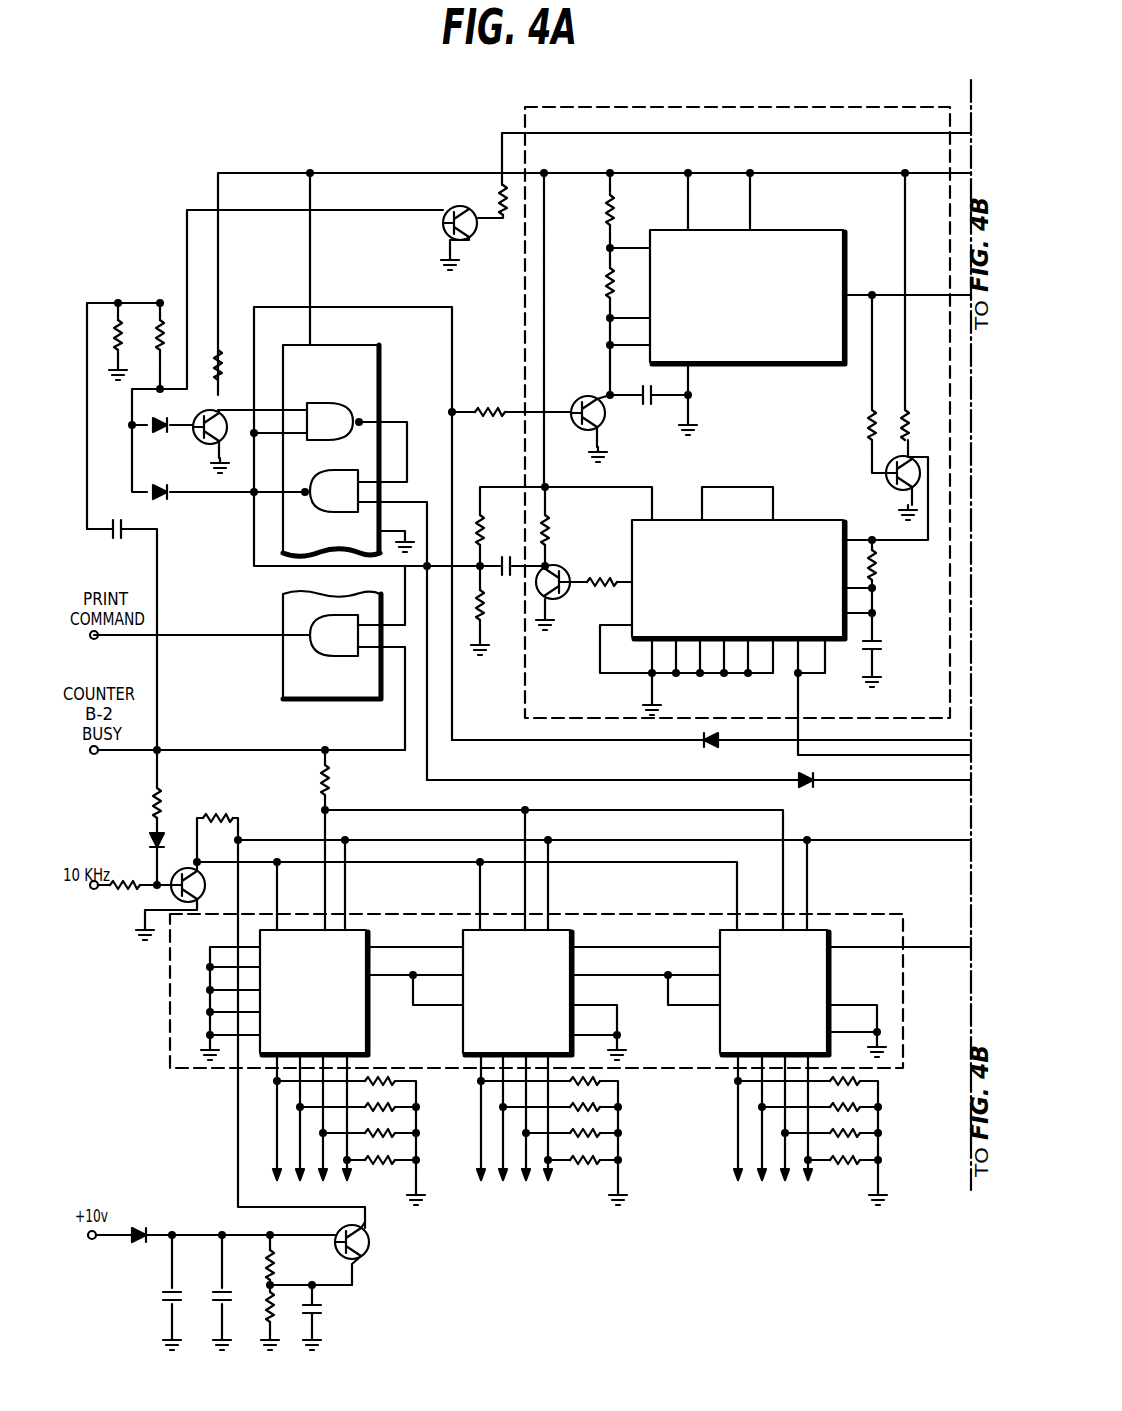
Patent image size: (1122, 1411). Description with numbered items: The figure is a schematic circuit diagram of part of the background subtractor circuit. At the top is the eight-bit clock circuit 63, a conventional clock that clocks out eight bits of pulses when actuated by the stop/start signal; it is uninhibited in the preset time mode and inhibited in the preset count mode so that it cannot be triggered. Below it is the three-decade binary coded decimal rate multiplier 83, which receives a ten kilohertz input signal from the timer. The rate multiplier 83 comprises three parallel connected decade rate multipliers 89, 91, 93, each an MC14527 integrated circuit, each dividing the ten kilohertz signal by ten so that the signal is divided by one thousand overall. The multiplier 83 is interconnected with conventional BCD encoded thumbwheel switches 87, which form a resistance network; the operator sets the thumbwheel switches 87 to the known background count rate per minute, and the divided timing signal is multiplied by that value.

The 8-bit clock circuit 63 is at (738, 105).
The three-decade binary coded decimal rate multiplier 83 is at (542, 991).
The thumbwheel switches 87 is at (633, 1226).
The decade rate multiplier 89 is at (366, 1032).
The decade rate multiplier 91 is at (463, 1032).
The decade rate multiplier 93 is at (724, 1030).